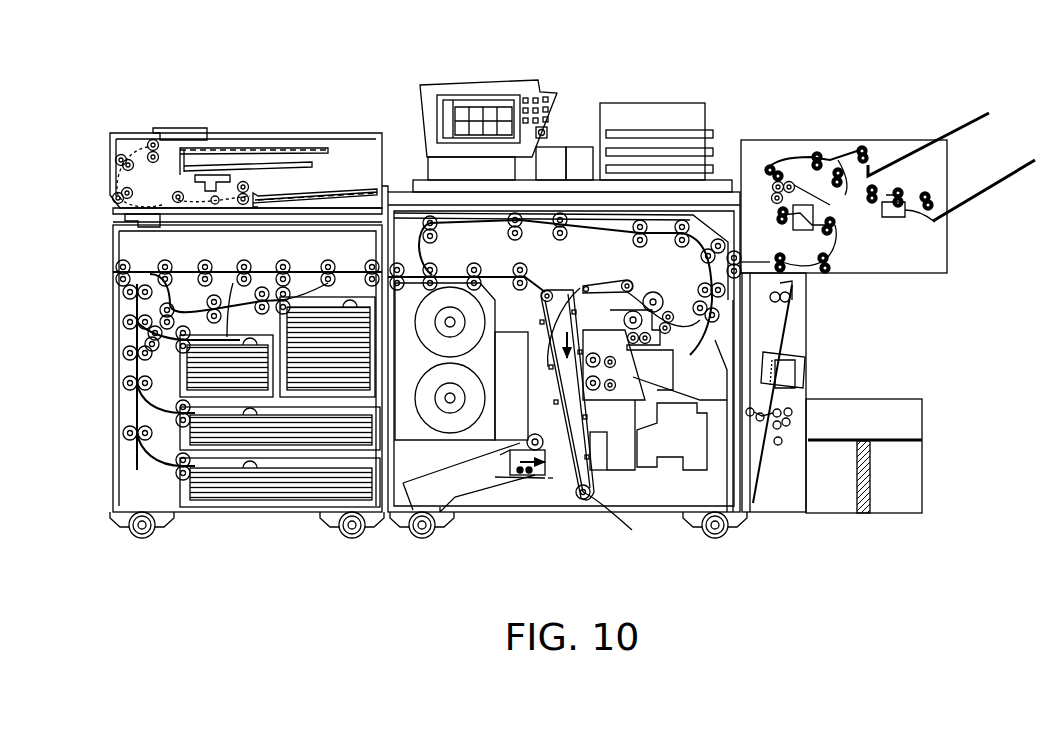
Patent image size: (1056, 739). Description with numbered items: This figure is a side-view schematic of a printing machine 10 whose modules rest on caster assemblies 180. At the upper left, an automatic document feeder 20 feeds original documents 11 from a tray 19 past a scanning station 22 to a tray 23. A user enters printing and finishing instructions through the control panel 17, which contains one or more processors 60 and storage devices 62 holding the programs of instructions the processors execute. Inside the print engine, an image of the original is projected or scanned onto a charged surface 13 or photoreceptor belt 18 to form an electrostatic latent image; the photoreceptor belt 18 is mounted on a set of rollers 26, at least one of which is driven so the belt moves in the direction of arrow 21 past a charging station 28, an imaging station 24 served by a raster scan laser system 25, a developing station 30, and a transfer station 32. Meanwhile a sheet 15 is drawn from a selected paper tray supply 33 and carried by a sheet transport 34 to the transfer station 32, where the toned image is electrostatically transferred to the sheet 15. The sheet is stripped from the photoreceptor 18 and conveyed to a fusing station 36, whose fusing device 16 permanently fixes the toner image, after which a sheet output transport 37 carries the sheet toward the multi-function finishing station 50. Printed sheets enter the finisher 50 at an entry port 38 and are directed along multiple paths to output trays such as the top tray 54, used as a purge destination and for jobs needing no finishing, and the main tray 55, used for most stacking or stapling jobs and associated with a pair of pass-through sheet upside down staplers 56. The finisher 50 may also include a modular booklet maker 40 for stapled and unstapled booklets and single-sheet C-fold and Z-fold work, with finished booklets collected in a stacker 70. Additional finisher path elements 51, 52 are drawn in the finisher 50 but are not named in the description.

The printing machine 10 is at (645, 78).
The original documents 11 is at (262, 149).
The charged surface 13 is at (568, 488).
The sheet 15 is at (322, 315).
The fusing device 16 is at (660, 295).
The control panel 17 is at (470, 82).
The photoreceptor belt 18 is at (540, 322).
The tray 19 is at (316, 150).
The automatic document feeder 20 is at (170, 108).
The arrow 21 is at (545, 378).
The scanning station 22 is at (205, 188).
The tray 23 is at (383, 184).
The imaging station 24 is at (508, 462).
The raster scan laser system 25 is at (515, 488).
The rollers 26 is at (543, 334).
The charging station 28 is at (610, 456).
The developing station 30 is at (508, 452).
The transfer station 32 is at (563, 276).
The paper tray supply 33 is at (229, 283).
The sheet transport 34 is at (178, 268).
The fusing station 36 is at (645, 276).
The sheet output transport 37 is at (684, 365).
The entry port 38 is at (748, 275).
The modular booklet maker 40 is at (818, 311).
The multi-function finishing station 50 is at (830, 110).
The finisher input path 51 is at (783, 165).
The stapler unit 52 is at (840, 185).
The top tray 54 is at (962, 128).
The main tray 55 is at (1027, 165).
The pass-through sheet upside down staplers 56 is at (935, 222).
The processors 60 is at (550, 170).
The storage devices 62 is at (578, 170).
The stacker 70 is at (872, 368).
The caster assemblies 180 is at (420, 550).